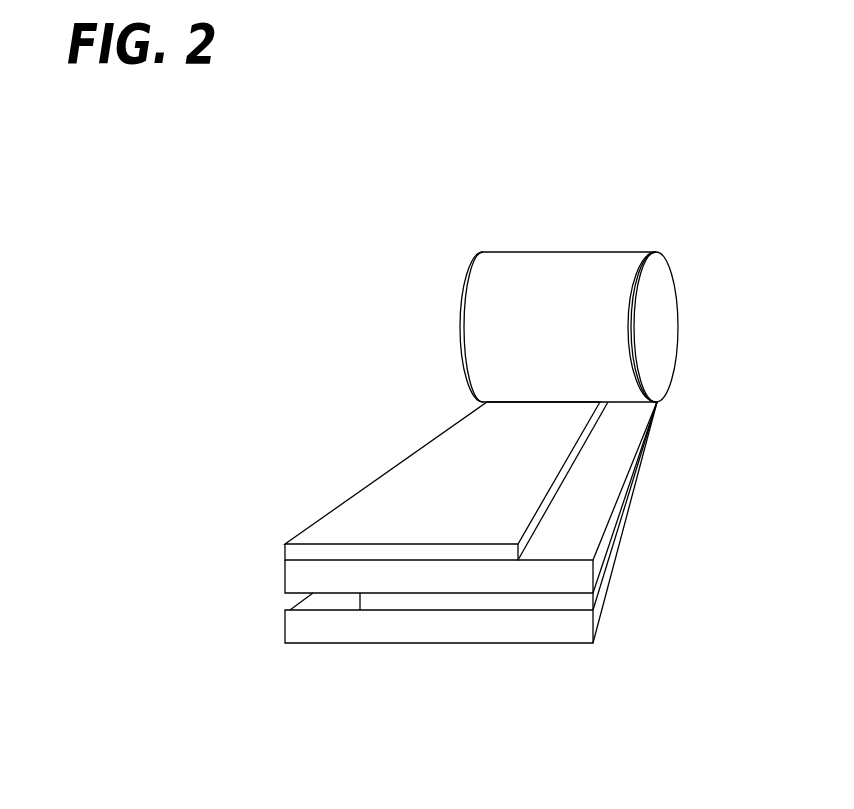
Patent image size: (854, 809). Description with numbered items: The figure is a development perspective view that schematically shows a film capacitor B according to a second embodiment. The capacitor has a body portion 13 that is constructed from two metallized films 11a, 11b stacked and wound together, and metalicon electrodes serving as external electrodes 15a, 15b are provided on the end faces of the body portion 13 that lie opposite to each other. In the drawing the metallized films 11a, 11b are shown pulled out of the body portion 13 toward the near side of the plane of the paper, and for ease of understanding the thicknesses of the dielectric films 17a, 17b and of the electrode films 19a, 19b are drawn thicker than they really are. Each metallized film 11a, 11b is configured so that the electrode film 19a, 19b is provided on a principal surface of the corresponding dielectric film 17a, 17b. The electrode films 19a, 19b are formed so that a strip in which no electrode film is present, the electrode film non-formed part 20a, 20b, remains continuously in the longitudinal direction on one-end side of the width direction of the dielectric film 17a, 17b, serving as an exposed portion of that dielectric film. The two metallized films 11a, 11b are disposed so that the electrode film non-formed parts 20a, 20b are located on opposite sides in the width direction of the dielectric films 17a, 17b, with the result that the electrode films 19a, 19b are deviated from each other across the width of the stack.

The film capacitor B is at (652, 218).
The body portion 13 is at (567, 262).
The external electrode 15a is at (460, 322).
The external electrode 15b is at (668, 308).
The metallized film 11a is at (473, 482).
The dielectric film 17a is at (302, 576).
The electrode film 19a is at (342, 557).
The electrode film non-formed part 20a is at (598, 488).
The metallized film 11b is at (431, 589).
The dielectric film 17b is at (440, 630).
The electrode film 19b is at (527, 603).
The electrode film non-formed part 20b is at (322, 604).